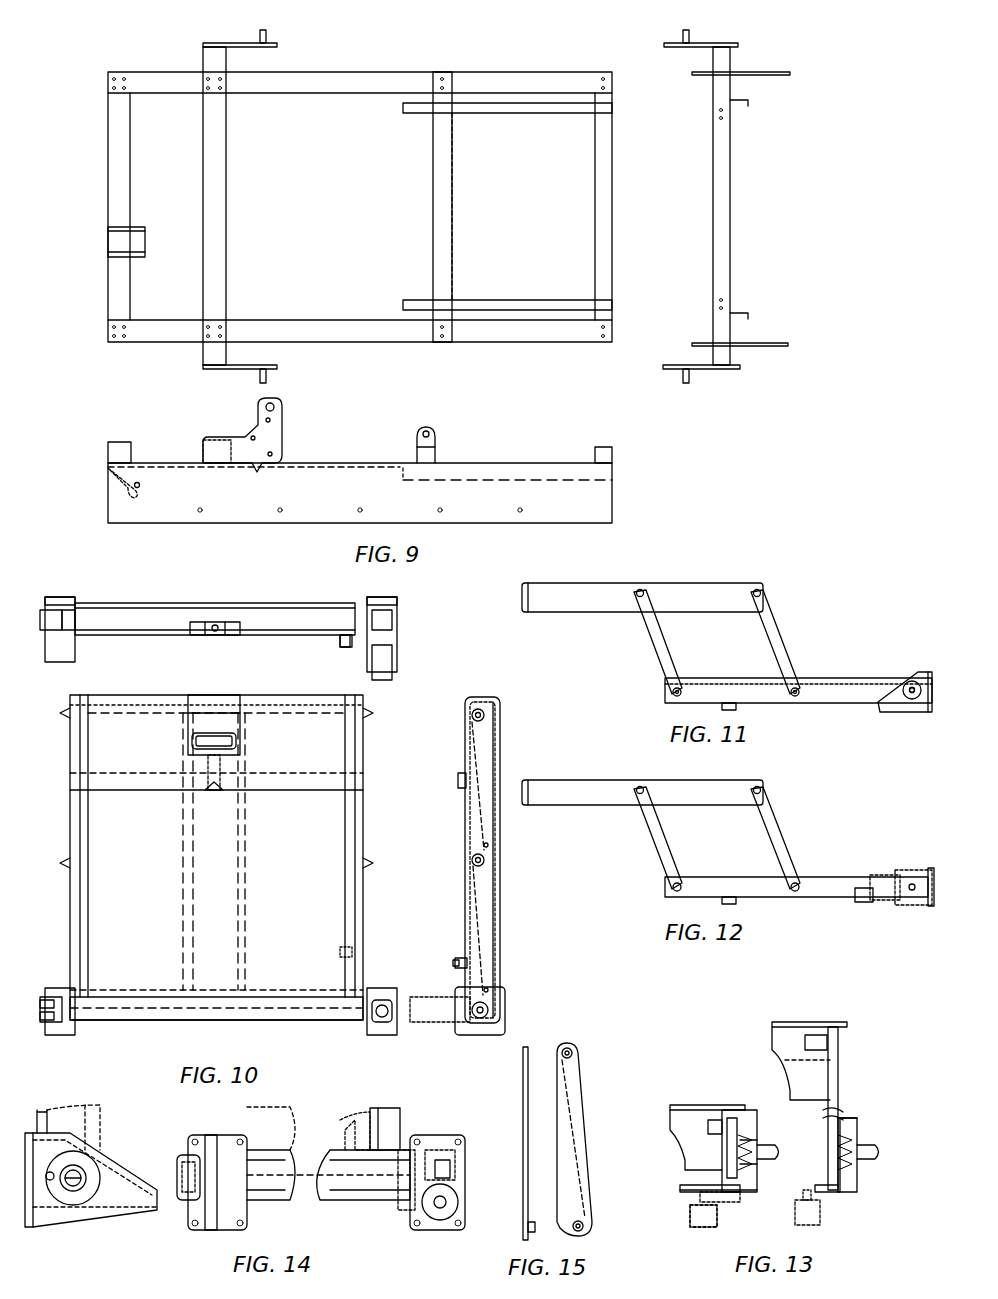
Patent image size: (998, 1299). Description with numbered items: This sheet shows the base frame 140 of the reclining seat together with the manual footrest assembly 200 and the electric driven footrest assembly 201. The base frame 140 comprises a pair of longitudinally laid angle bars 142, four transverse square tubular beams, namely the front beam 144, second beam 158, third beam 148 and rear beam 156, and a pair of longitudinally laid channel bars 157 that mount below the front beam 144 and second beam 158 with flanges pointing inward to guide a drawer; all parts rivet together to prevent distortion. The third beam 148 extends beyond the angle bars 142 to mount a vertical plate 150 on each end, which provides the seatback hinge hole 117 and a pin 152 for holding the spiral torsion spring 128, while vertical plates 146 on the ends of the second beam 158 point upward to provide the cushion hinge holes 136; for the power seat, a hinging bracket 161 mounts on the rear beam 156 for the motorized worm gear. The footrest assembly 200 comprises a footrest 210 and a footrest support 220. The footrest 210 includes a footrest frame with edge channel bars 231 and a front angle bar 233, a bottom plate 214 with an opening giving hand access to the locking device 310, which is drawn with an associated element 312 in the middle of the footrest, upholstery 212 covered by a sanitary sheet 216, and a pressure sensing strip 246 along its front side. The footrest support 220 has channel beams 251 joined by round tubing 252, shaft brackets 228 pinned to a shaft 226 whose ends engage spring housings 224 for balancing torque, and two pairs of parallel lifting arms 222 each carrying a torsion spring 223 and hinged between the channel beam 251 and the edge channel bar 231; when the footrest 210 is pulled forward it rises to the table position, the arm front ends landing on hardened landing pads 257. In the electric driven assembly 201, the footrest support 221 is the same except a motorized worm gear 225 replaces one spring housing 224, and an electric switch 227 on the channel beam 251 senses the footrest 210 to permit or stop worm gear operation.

In FIG. 9, the seatback hinge hole 117 is at (282, 405).
In FIG. 14, the spiral torsion spring 128 is at (85, 1165).
In FIG. 9, the cushion hinge hole 136 is at (432, 428).
In FIG. 9, the base frame 140 is at (660, 490).
In FIG. 9, the angle bar 142 is at (360, 72).
In FIG. 9, the front beam 144 is at (595, 275).
In FIG. 9, the vertical plate 146 is at (450, 72).
In FIG. 9, the third beam 148 is at (226, 205).
In FIG. 9, the vertical plate 150 is at (245, 47).
In FIG. 9, the pin 152 is at (258, 36).
In FIG. 9, the rear beam 156 is at (130, 290).
In FIG. 9, the channel bar 157 is at (403, 113).
In FIG. 9, the second beam 158 is at (455, 180).
In FIG. 9, the hinging bracket 161 is at (135, 232).
In FIG. 11, the manual footrest assembly 200 is at (818, 580).
In FIG. 10, the electric driven footrest assembly 201 is at (524, 930).
In FIG. 12, the electric driven footrest assembly 201 is at (836, 800).
In FIG. 11, the footrest 210 is at (733, 580).
In FIG. 12, the footrest 210 is at (570, 780).
In FIG. 13, the footrest 210 is at (803, 1008).
In FIG. 13, the upholstery 212 is at (742, 1110).
In FIG. 10, the bottom plate 214 is at (188, 735).
In FIG. 13, the bottom plate 214 is at (690, 1195).
In FIG. 13, the sanitary sheet 216 is at (712, 1105).
In FIG. 11, the footrest support 220 is at (843, 662).
In FIG. 12, the footrest support 221 is at (843, 860).
In FIG. 10, the parallel lifting arm 222 is at (470, 760).
In FIG. 11, the parallel lifting arm 222 is at (652, 642).
In FIG. 12, the parallel lifting arm 222 is at (782, 832).
In FIG. 13, the parallel lifting arm 222 is at (840, 1085).
In FIG. 15, the parallel lifting arm 222 is at (582, 1138).
In FIG. 13, the torsion spring 223 is at (855, 1178).
In FIG. 10, the spring housing 224 is at (78, 650).
In FIG. 11, the spring housing 224 is at (910, 712).
In FIG. 14, the spring housing 224 is at (95, 1222).
In FIG. 10, the motorized worm gear 225 is at (397, 620).
In FIG. 12, the motorized worm gear 225 is at (915, 905).
In FIG. 14, the motorized worm gear 225 is at (445, 1228).
In FIG. 11, the shaft 226 is at (905, 692).
In FIG. 10, the electric switch 227 is at (338, 640).
In FIG. 12, the electric switch 227 is at (862, 902).
In FIG. 13, the electric switch 227 is at (700, 1230).
In FIG. 14, the shaft bracket 228 is at (440, 1160).
In FIG. 13, the edge channel bar 231 is at (705, 1175).
In FIG. 14, the edge channel bar 231 is at (385, 1115).
In FIG. 10, the front angle bar 233 is at (215, 735).
In FIG. 10, the pressure sensing strip 246 is at (482, 697).
In FIG. 12, the pressure sensing strip 246 is at (524, 778).
In FIG. 10, the channel beam 251 is at (358, 645).
In FIG. 13, the channel beam 251 is at (742, 1195).
In FIG. 14, the channel beam 251 is at (410, 1130).
In FIG. 14, the round tubing 252 is at (325, 1200).
In FIG. 13, the landing pad 257 is at (750, 1183).
In FIG. 10, the locking device 310 is at (232, 620).
In FIG. 10, the slot 312 is at (212, 733).